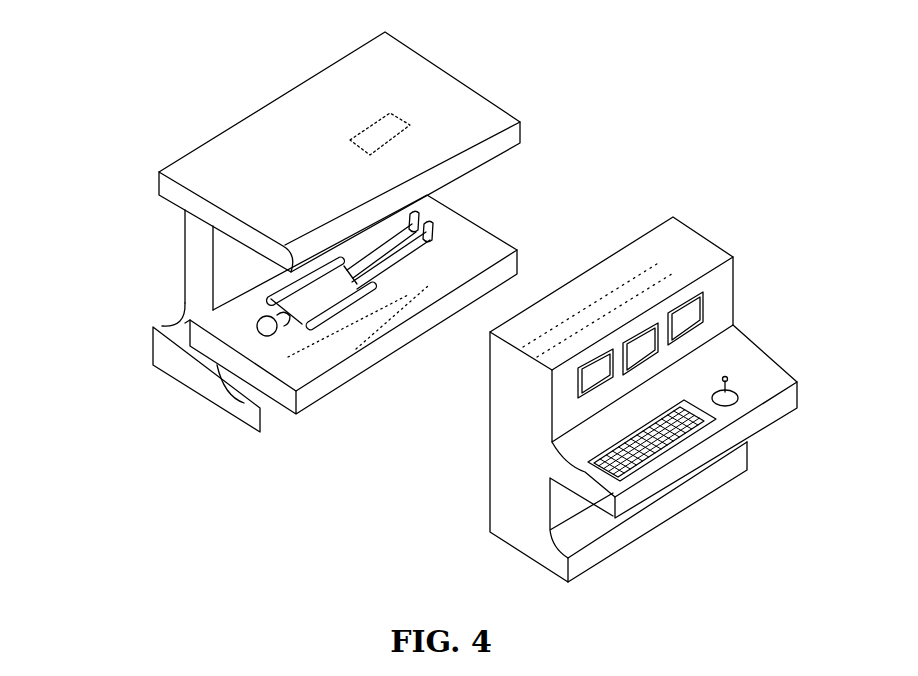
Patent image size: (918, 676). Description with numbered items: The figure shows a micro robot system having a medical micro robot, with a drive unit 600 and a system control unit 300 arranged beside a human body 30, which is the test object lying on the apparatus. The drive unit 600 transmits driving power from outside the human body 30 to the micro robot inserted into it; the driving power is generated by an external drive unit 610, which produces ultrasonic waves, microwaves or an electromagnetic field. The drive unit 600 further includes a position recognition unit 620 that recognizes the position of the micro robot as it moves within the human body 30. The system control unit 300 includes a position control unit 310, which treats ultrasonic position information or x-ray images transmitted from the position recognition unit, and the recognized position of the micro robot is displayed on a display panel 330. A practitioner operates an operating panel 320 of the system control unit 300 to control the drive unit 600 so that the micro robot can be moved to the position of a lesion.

The drive unit 600 is at (319, 227).
The external drive unit 610 is at (386, 127).
The position recognition unit 620 is at (412, 280).
The human body 30 is at (262, 333).
The system control unit 300 is at (640, 390).
The position control unit 310 is at (531, 358).
The operating panel 320 is at (732, 413).
The display panel 330 is at (693, 313).